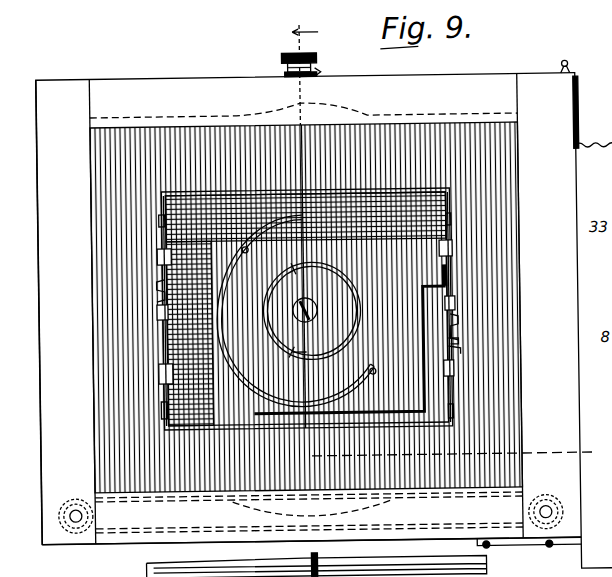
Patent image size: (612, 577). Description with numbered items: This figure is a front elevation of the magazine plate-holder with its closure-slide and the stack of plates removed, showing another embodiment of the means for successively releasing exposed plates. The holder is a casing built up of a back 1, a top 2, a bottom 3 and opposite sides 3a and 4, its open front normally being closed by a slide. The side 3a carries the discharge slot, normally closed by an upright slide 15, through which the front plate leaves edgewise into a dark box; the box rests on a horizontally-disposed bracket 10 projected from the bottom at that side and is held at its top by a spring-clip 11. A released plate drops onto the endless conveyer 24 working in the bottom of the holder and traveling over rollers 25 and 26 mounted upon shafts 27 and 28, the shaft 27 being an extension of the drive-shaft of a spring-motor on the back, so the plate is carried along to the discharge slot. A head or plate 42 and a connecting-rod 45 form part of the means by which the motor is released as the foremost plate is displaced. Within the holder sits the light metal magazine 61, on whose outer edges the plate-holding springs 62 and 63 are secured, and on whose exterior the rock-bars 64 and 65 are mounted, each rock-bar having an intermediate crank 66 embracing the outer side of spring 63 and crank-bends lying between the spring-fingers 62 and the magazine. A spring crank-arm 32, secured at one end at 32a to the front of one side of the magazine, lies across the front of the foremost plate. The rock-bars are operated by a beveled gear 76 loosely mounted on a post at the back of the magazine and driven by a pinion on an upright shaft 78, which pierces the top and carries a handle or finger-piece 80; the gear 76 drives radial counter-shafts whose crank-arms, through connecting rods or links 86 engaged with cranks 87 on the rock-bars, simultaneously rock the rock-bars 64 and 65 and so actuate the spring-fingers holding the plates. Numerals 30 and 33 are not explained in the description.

The back 1 is at (182, 154).
The top 2 is at (182, 78).
The bottom 3 is at (117, 542).
The side 3a is at (557, 306).
The side 4 is at (39, 252).
The bracket 10 is at (451, 234).
The spring-clip 11 is at (584, 143).
The upright slide 15 is at (572, 70).
The endless conveyer 24 is at (157, 500).
The roller 25 is at (73, 527).
The roller 26 is at (541, 534).
The shaft 27 is at (73, 497).
The shaft 28 is at (543, 504).
The spiral spring 30 is at (360, 328).
The spring crank-arm 32 is at (372, 415).
The secured end portion 32a is at (443, 273).
The lever 33 is at (316, 563).
The head or plate 42 is at (328, 92).
The connecting-rod 45 is at (321, 70).
The magazine 61 is at (297, 311).
The spring-fingers 62 is at (471, 370).
The spring 63 is at (168, 321).
The rock-bar 64 is at (162, 340).
The rock-bar 65 is at (157, 312).
The intermediate crank 66 is at (458, 297).
The beveled gear 76 is at (604, 375).
The upright shaft 78 is at (306, 160).
The handle or finger-piece 80 is at (316, 57).
The connecting rod or link 86 is at (453, 340).
The crank 87 is at (458, 350).